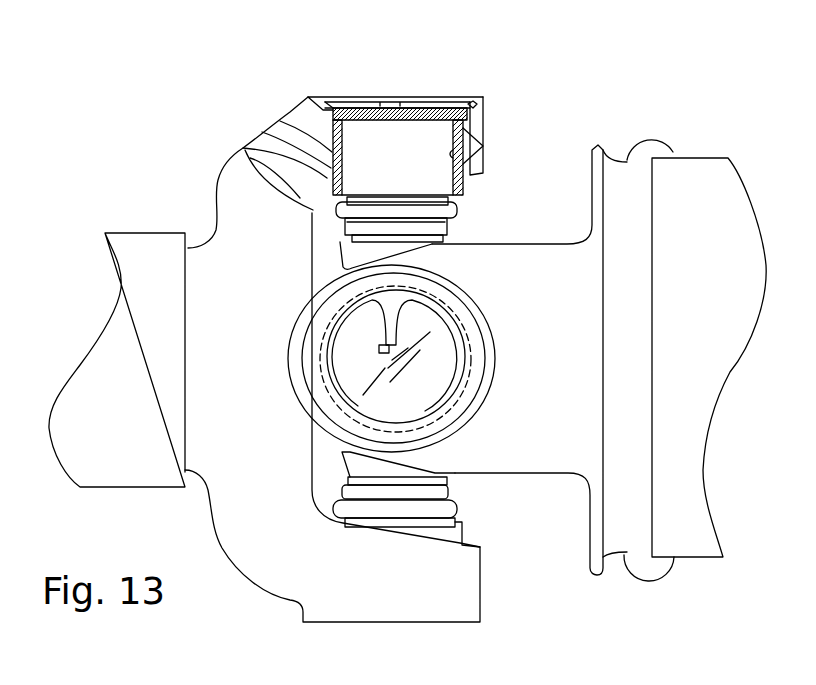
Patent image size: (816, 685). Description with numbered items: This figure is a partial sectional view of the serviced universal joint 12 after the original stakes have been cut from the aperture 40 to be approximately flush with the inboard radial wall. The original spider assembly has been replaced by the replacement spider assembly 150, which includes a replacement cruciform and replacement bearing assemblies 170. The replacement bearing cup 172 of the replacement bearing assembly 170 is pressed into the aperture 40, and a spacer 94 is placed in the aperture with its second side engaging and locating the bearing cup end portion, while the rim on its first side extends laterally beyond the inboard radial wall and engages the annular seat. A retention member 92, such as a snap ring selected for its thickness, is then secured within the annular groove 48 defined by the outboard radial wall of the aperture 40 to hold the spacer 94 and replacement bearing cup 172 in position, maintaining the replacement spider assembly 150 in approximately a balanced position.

The serviced universal joint 12 is at (603, 113).
The aperture 40 is at (468, 157).
The annular groove 48 is at (472, 106).
The retention member 92 is at (401, 104).
The spacer 94 is at (353, 108).
The replacement spider assembly 150 is at (341, 263).
The replacement bearing assembly 170 is at (358, 148).
The replacement bearing cup 172 is at (330, 205).